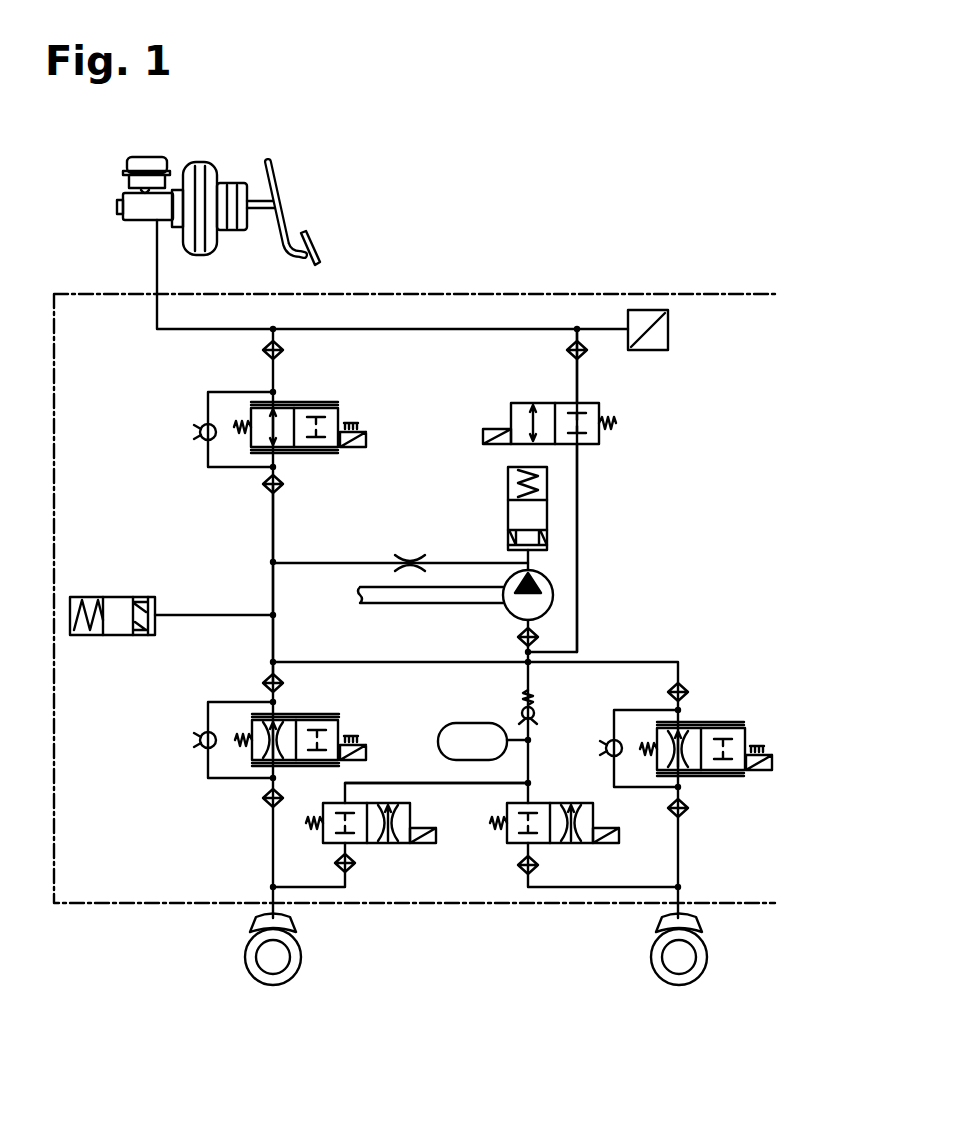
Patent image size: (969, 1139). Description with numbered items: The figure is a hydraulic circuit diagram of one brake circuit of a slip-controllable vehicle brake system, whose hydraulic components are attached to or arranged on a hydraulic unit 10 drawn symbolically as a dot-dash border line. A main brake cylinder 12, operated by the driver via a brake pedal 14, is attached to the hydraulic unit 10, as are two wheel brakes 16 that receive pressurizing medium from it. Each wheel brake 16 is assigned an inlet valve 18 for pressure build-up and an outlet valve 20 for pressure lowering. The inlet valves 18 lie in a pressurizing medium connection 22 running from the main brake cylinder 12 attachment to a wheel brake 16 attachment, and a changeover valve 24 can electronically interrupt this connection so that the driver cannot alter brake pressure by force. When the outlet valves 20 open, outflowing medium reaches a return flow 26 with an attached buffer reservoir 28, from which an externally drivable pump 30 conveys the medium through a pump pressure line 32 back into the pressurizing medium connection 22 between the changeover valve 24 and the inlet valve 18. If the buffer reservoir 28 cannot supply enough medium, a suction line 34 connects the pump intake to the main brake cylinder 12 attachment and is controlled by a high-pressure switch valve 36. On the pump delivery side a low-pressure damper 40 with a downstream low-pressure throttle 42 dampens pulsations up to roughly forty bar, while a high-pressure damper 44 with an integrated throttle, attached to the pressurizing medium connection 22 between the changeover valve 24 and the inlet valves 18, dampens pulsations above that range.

The hydraulic unit 10 is at (553, 294).
The main brake cylinder 12 is at (128, 210).
The brake pedal 14 is at (310, 250).
The wheel brake 16 is at (273, 957).
The inlet valve 18 is at (246, 783).
The outlet valve 20 is at (380, 855).
The pressurizing medium connection 22 is at (270, 638).
The changeover valve 24 is at (196, 413).
The return flow 26 is at (400, 797).
The buffer reservoir 28 is at (477, 738).
The pump 30 is at (530, 598).
The pump pressure line 32 is at (455, 560).
The suction line 34 is at (579, 564).
The high-pressure switch valve 36 is at (630, 424).
The low-pressure damper 40 is at (532, 520).
The low-pressure throttle 42 is at (410, 556).
The high-pressure damper 44 is at (122, 608).